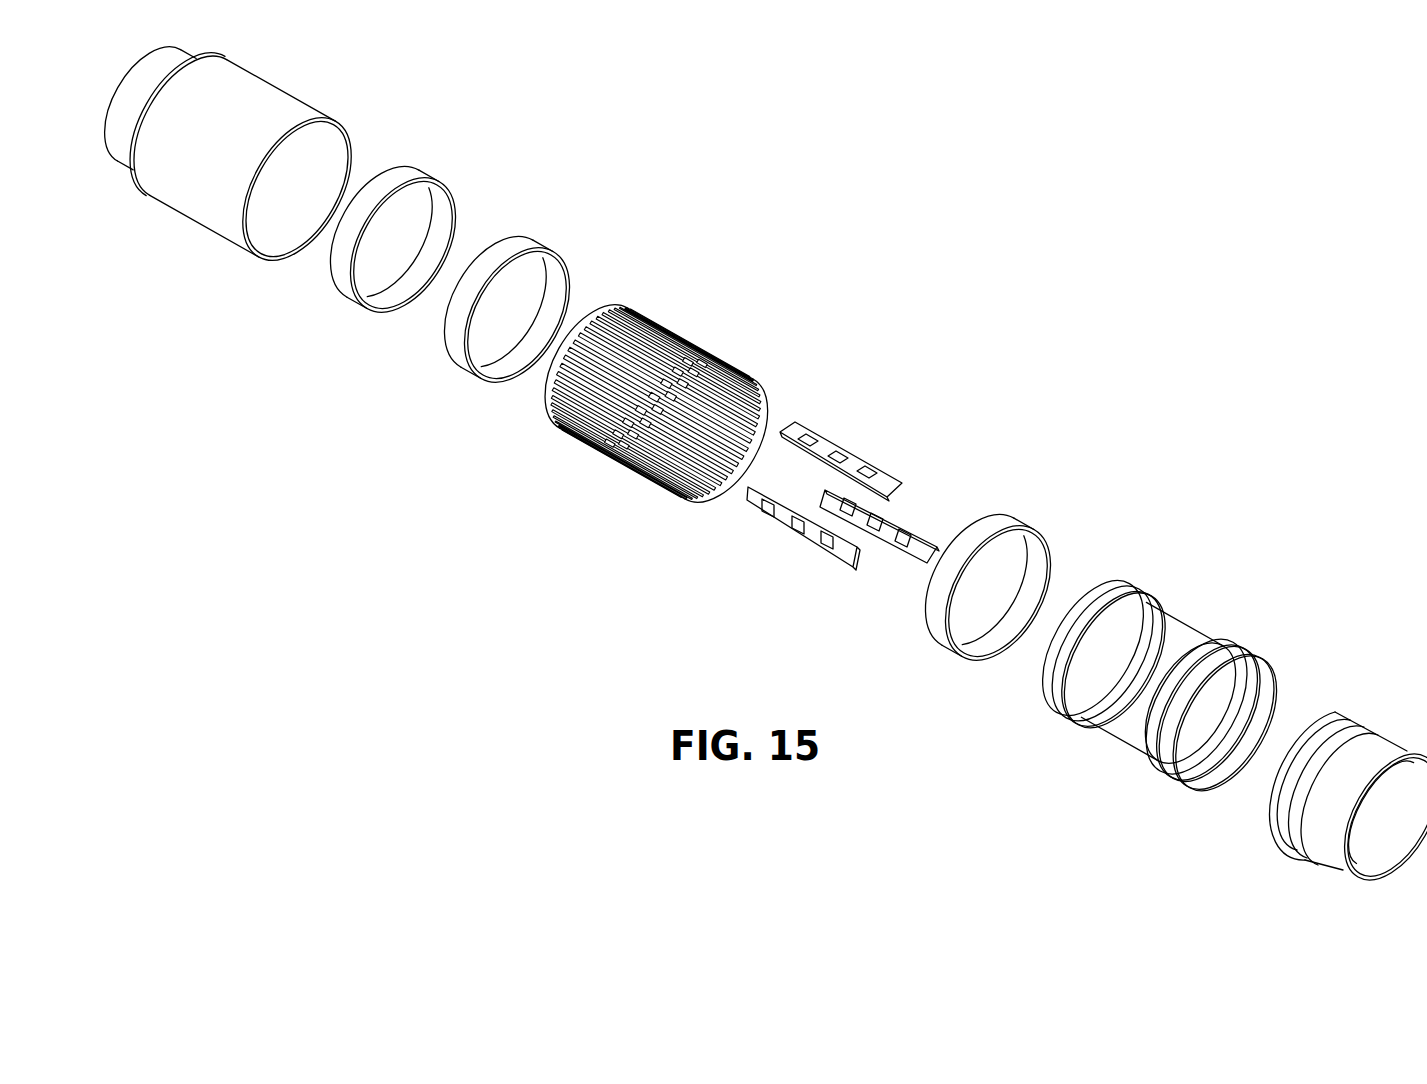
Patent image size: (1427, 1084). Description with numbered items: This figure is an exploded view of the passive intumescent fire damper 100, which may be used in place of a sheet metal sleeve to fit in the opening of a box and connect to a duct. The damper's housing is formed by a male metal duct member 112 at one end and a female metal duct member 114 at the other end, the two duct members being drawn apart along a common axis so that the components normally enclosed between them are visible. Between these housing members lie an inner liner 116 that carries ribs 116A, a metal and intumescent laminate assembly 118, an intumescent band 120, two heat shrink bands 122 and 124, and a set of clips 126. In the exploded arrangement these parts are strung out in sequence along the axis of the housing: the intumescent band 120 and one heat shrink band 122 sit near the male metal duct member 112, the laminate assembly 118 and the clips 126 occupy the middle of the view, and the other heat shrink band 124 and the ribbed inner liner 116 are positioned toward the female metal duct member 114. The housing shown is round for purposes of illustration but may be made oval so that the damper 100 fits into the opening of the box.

The passive intumescent fire damper 100 is at (862, 328).
The male metal duct member 112 is at (276, 101).
The female metal duct member 114 is at (1340, 727).
The inner liner 116 is at (1187, 643).
The ribs 116A is at (1163, 622).
The metal and intumescent laminate assembly 118 is at (697, 358).
The intumescent band 120 is at (407, 180).
The heat shrink band 122 is at (520, 246).
The heat shrink band 124 is at (1012, 523).
The clips 126 is at (855, 463).